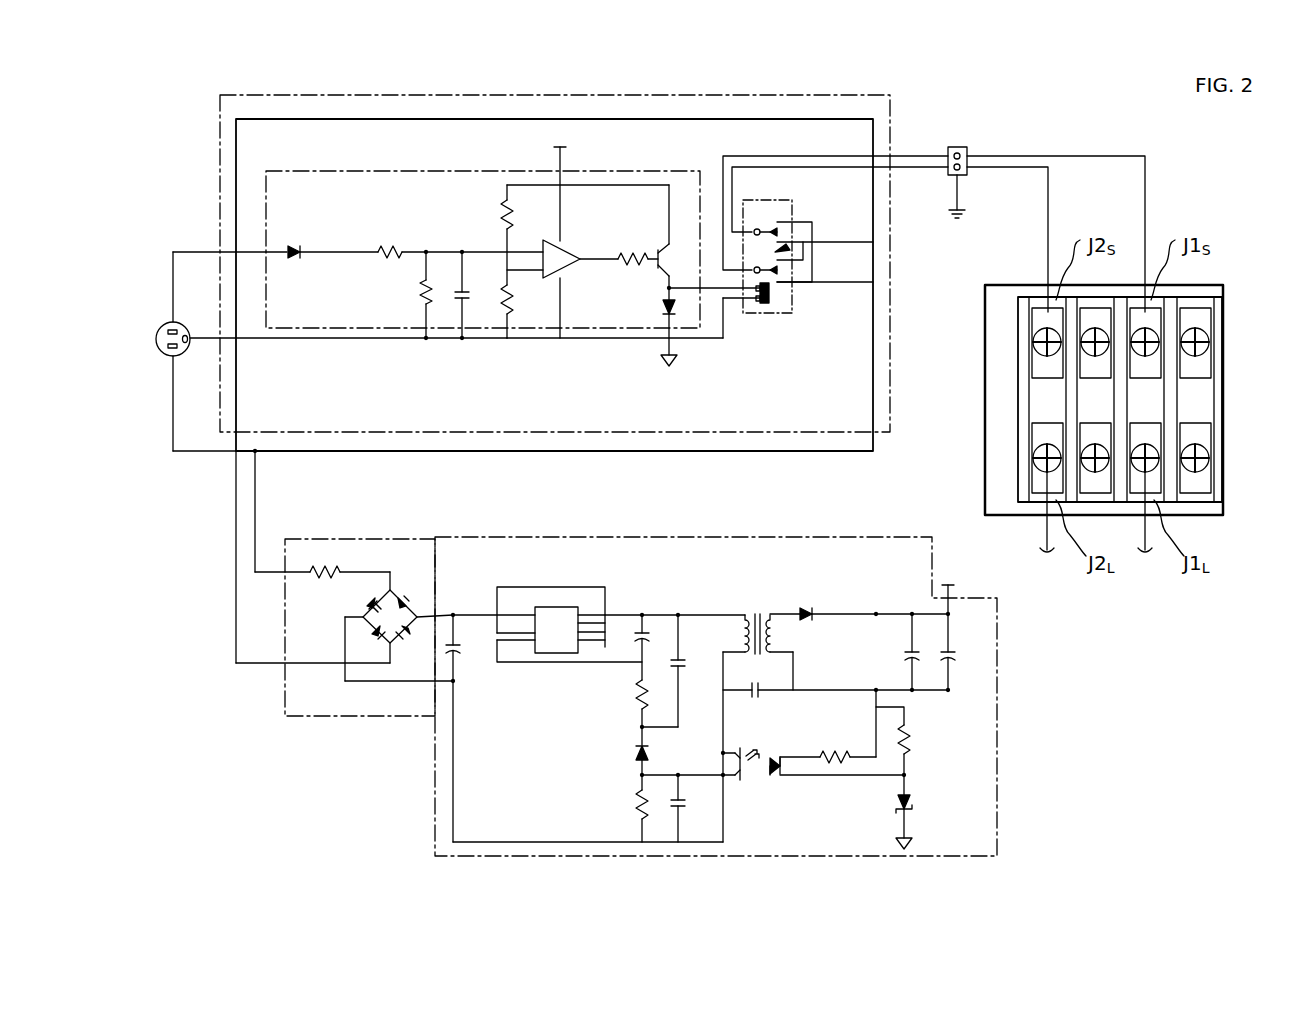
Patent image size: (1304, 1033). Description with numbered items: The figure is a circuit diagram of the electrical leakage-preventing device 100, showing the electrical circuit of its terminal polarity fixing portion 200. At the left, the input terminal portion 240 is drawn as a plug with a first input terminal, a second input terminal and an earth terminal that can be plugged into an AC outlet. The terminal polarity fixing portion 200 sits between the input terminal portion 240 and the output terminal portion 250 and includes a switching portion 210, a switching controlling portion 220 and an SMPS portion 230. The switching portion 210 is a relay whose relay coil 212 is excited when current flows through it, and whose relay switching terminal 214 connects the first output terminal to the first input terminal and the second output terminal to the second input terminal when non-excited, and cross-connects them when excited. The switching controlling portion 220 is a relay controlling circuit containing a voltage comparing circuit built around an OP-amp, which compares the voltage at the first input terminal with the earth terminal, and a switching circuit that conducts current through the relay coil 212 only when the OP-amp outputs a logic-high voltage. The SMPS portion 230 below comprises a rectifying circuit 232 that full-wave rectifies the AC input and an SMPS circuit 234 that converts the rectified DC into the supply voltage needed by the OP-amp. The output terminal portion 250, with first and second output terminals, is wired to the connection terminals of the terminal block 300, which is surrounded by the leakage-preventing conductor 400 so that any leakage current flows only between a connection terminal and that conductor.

The electrical leakage-preventing device 100 is at (802, 66).
The terminal polarity fixing portion 200 is at (220, 97).
The switching portion 210 is at (755, 313).
The relay coil 212 is at (782, 297).
The relay switching terminal 214 is at (800, 222).
The switching controlling portion 220 is at (265, 195).
The SMPS portion 230 is at (540, 537).
The rectifying circuit 232 is at (350, 716).
The SMPS circuit 234 is at (815, 537).
The input terminal portion 240 is at (173, 322).
The output terminal portion 250 is at (972, 142).
The terminal block 300 is at (1018, 400).
The leakage-preventing conductor 400 is at (985, 366).